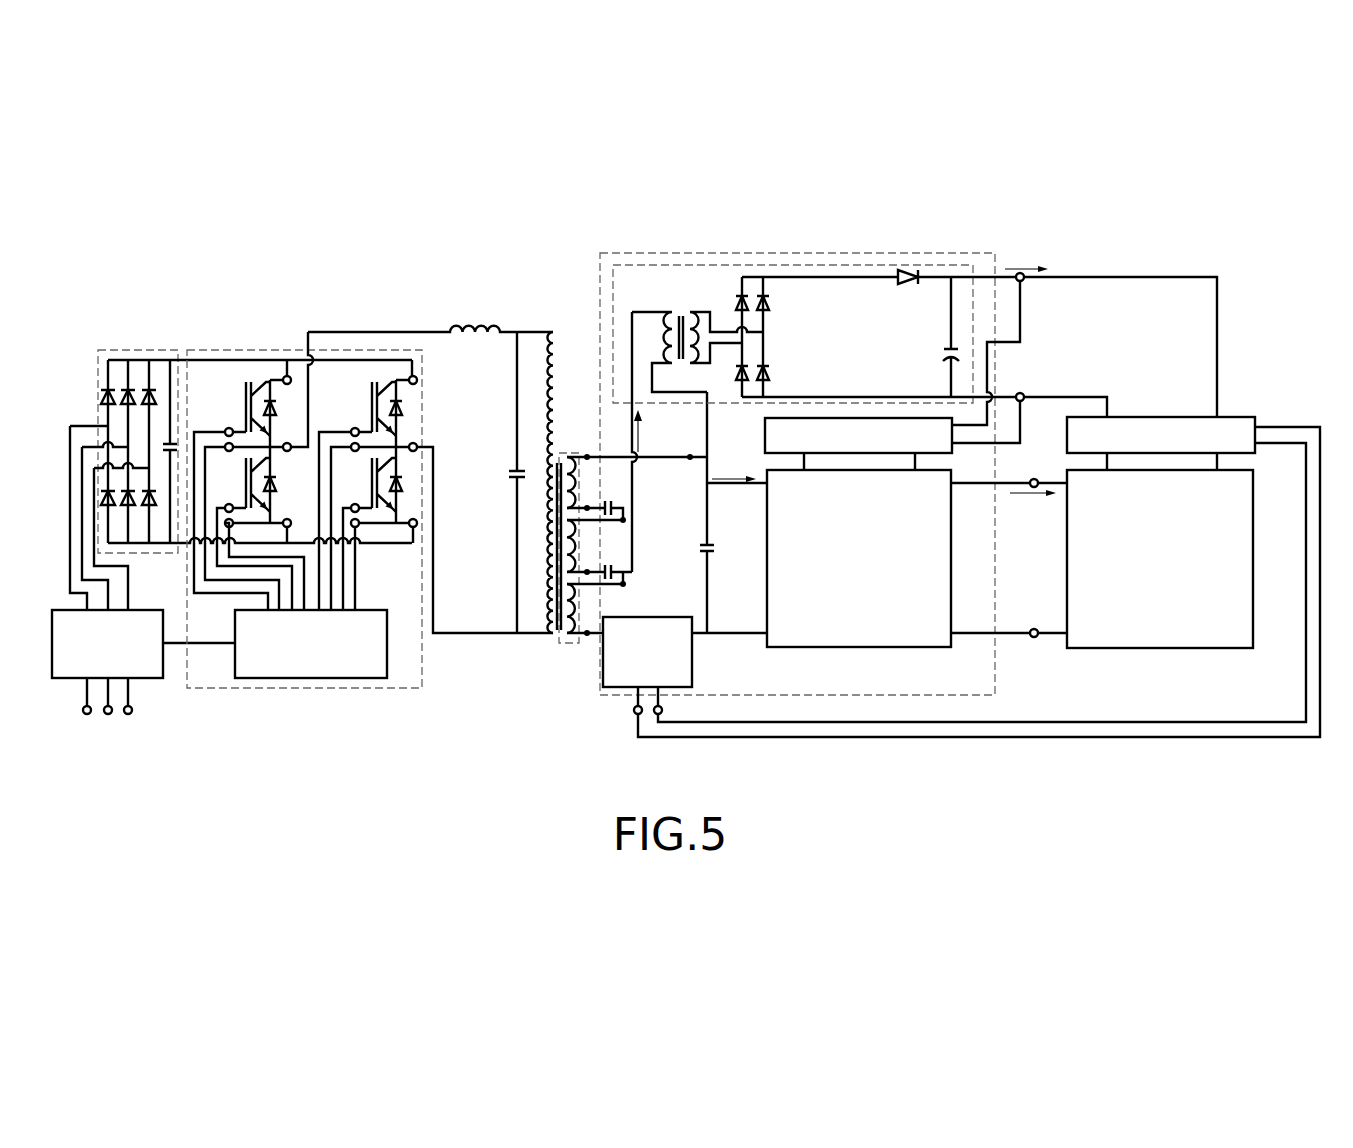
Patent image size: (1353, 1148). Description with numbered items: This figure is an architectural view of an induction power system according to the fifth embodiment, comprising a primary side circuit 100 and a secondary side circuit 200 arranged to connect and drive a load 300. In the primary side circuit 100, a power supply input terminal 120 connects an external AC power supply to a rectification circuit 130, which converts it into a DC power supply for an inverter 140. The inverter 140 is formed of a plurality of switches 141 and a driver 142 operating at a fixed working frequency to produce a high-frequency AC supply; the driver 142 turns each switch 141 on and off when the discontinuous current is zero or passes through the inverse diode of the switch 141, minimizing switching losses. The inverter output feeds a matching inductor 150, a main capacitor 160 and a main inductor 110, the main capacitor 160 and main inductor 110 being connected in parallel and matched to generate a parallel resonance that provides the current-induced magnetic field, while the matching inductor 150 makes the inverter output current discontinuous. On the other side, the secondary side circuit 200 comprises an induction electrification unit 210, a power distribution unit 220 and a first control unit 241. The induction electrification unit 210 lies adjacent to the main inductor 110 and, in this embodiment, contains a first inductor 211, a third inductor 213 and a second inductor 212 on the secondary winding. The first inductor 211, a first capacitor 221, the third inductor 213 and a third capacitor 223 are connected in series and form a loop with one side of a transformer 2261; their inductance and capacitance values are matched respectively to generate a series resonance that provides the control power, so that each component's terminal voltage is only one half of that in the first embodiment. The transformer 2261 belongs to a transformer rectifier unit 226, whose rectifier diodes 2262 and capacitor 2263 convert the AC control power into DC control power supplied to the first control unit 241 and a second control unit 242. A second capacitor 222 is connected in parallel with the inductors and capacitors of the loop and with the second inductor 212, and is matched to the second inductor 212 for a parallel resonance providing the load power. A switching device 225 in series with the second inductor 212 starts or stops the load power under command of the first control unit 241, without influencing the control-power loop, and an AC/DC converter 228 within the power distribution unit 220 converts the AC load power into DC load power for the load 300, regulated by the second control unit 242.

The primary side circuit 100 is at (150, 193).
The secondary side circuit 200 is at (1153, 193).
The main inductor 110 is at (552, 360).
The power supply input terminal 120 is at (72, 682).
The rectification circuit 130 is at (122, 348).
The inverter 140 is at (232, 348).
The switch 141 is at (249, 378).
The driver 142 is at (297, 682).
The matching inductor 150 is at (468, 326).
The main capacitor 160 is at (508, 472).
The induction electrification unit 210 is at (577, 653).
The first inductor 211 is at (570, 455).
The second inductor 212 is at (568, 636).
The third inductor 213 is at (563, 532).
The power distribution unit 220 is at (628, 252).
The first capacitor 221 is at (610, 503).
The second capacitor 222 is at (716, 546).
The third capacitor 223 is at (610, 566).
The switching device 225 is at (668, 616).
The transformer rectifier unit 226 is at (680, 265).
The transformer 2261 is at (700, 310).
The rectifier diodes 2262 is at (770, 307).
The capacitor 2263 is at (944, 352).
The AC/DC converter 228 is at (828, 650).
The first control unit 241 is at (1233, 415).
The second control unit 242 is at (936, 456).
The load 300 is at (1255, 575).